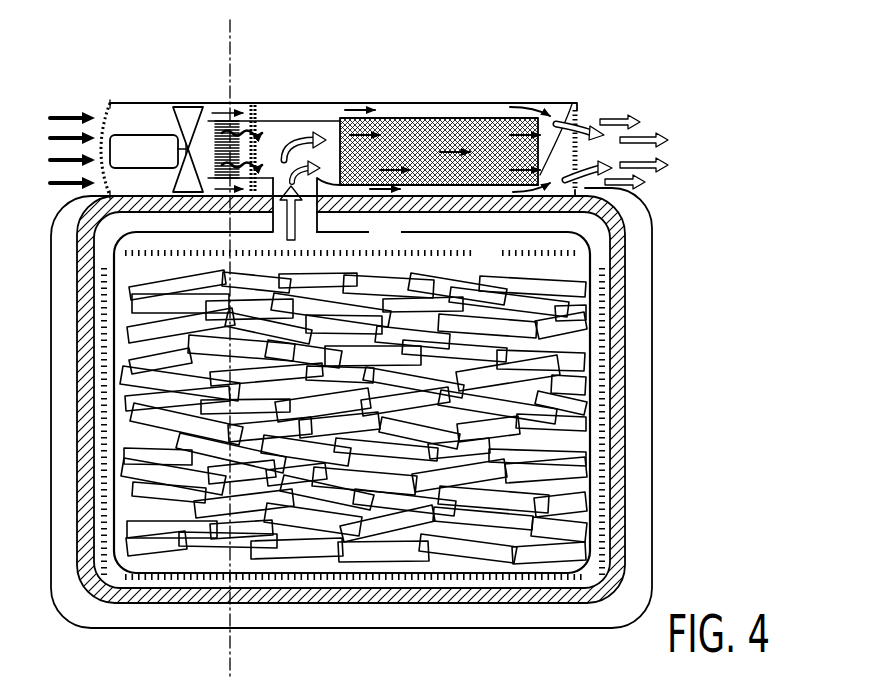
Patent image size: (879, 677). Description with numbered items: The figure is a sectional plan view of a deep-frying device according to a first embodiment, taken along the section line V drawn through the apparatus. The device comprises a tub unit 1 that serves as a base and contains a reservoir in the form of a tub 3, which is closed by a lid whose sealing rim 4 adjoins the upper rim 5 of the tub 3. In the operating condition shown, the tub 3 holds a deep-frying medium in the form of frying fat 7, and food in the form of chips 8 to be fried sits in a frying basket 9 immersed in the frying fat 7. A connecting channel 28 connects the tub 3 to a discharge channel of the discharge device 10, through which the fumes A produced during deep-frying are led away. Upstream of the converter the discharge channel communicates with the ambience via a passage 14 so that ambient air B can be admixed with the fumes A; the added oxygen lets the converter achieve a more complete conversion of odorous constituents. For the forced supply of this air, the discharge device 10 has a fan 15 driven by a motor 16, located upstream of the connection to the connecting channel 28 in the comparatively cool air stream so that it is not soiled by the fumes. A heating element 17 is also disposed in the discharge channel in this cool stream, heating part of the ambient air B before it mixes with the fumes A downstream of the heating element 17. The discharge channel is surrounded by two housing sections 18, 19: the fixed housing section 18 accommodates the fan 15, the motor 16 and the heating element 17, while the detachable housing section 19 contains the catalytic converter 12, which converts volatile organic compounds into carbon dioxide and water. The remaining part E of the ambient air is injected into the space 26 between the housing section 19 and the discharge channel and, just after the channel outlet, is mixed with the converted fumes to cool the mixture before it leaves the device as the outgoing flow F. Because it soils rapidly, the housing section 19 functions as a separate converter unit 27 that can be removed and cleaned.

The tub unit 1 is at (692, 374).
The tub 3 is at (630, 446).
The sealing rim 4 is at (618, 247).
The upper rim 5 is at (625, 317).
The frying fat 7 is at (496, 265).
The chips 8 is at (560, 285).
The frying basket 9 is at (104, 280).
The discharge device 10 is at (314, 94).
The catalytic converter 12 is at (572, 104).
The passage 14 is at (137, 115).
The fan 15 is at (193, 108).
The motor 16 is at (156, 164).
The heating element 17 is at (256, 150).
The housing section 18 is at (168, 92).
The housing section 19 is at (546, 103).
The space 26 is at (440, 103).
The converter unit 27 is at (483, 89).
The connecting channel 28 is at (318, 226).
The fumes A is at (318, 226).
The ambient air B is at (50, 160).
The remaining part of the ambient air E is at (362, 103).
The outlet air flow F is at (648, 135).
The section line V is at (228, 30).